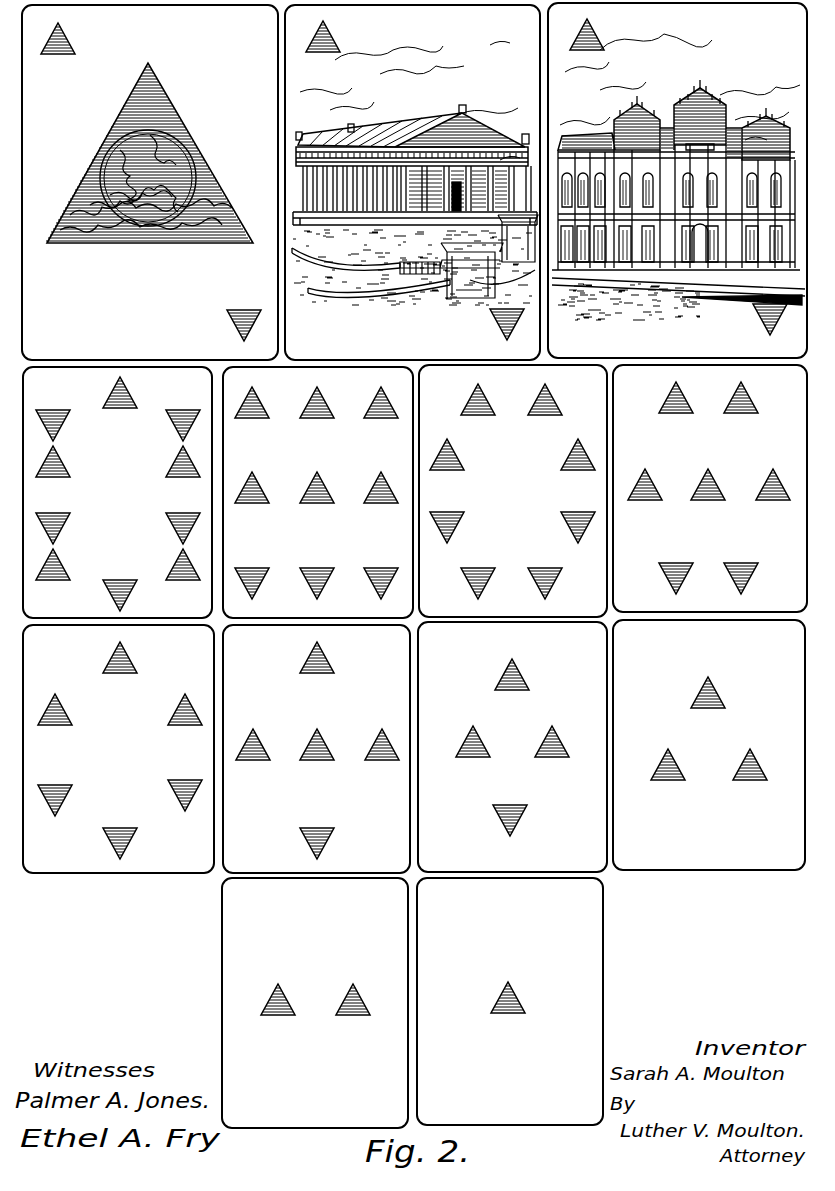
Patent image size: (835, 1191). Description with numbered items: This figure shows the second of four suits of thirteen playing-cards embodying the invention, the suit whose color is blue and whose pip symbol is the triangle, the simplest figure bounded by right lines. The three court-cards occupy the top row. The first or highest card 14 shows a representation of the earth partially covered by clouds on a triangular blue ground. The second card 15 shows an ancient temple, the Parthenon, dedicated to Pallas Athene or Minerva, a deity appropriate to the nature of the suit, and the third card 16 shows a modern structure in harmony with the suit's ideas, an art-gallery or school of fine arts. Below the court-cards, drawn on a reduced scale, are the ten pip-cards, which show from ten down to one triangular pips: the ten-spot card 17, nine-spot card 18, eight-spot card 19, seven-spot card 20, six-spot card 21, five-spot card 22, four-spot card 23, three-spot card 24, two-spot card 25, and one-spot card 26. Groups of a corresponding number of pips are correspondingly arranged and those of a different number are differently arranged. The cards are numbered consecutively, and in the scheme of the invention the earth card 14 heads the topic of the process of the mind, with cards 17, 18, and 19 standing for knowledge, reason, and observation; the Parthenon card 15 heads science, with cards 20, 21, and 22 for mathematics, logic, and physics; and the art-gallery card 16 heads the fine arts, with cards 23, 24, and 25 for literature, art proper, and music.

The card showing the earth 14 is at (150, 182).
The card showing a temple dedicated to Pallas Athene or Minerva 15 is at (412, 182).
The card showing an art-gallery or school of fine arts 16 is at (677, 180).
The ten-spot pip-card 17 is at (117, 492).
The nine-spot pip-card 18 is at (318, 492).
The eight-spot pip-card 19 is at (513, 491).
The seven-spot pip-card 20 is at (710, 488).
The six-spot pip-card 21 is at (118, 749).
The five-spot pip-card 22 is at (316, 749).
The four-spot pip-card 23 is at (512, 747).
The three-spot pip-card 24 is at (709, 745).
The two-spot pip-card 25 is at (315, 1003).
The one-spot pip-card 26 is at (510, 1001).